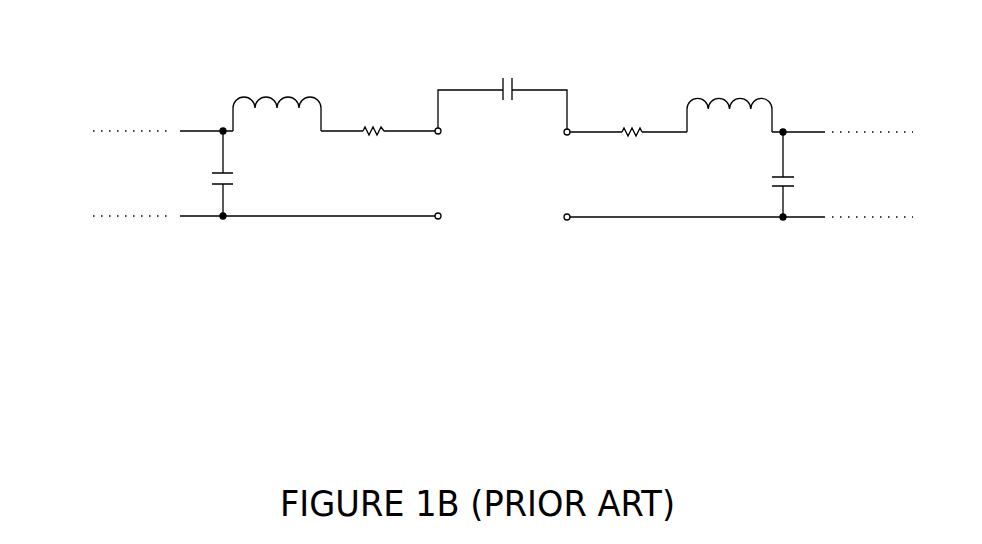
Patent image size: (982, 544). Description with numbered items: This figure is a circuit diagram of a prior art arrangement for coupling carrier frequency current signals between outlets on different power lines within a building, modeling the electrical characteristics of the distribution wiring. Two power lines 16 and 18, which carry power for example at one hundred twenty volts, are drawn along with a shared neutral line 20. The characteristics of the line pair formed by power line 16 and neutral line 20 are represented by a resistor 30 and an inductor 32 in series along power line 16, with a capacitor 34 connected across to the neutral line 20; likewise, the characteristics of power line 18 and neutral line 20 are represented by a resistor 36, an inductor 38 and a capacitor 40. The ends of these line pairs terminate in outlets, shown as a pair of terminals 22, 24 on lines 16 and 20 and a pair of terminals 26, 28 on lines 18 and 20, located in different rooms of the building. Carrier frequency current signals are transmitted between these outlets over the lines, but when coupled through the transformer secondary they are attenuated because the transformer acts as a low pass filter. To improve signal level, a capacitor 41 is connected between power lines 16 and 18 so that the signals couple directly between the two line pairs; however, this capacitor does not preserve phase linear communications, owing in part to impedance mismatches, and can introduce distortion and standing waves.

The power line 16 is at (232, 129).
The power line 18 is at (783, 122).
The neutral line 20 is at (313, 219).
The terminal 22 is at (444, 136).
The terminal 24 is at (436, 212).
The terminal 26 is at (562, 134).
The terminal 28 is at (569, 222).
The resistor 30 is at (372, 117).
The inductor 32 is at (287, 97).
The capacitor 34 is at (249, 183).
The resistor 36 is at (626, 119).
The inductor 38 is at (709, 104).
The capacitor 40 is at (771, 178).
The capacitor 41 is at (502, 76).